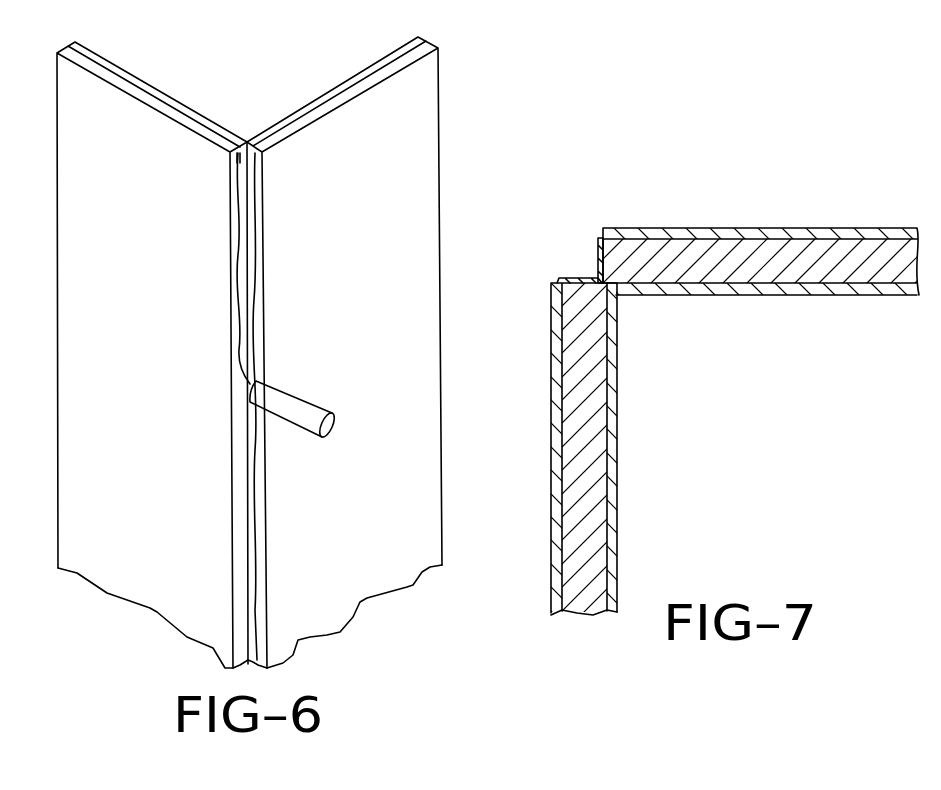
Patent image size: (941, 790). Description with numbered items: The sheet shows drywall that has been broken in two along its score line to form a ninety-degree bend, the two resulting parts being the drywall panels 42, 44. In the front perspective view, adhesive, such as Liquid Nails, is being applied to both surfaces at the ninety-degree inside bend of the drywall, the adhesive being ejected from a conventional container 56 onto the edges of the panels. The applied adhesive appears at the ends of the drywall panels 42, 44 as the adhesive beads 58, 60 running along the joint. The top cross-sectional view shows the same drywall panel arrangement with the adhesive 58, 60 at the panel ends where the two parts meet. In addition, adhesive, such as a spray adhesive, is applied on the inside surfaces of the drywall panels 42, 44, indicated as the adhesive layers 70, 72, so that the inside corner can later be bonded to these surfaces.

In FIG. 7, the drywall panel 42 is at (760, 270).
In FIG. 6, the drywall panel 44 is at (412, 158).
In FIG. 7, the drywall panel 44 is at (601, 447).
In FIG. 6, the container 56 is at (293, 400).
In FIG. 6, the adhesive 58 is at (237, 207).
In FIG. 7, the adhesive 58 is at (600, 252).
In FIG. 6, the adhesive 60 is at (256, 182).
In FIG. 7, the adhesive 60 is at (583, 280).
In FIG. 7, the adhesive 70 is at (710, 228).
In FIG. 7, the adhesive 72 is at (553, 503).